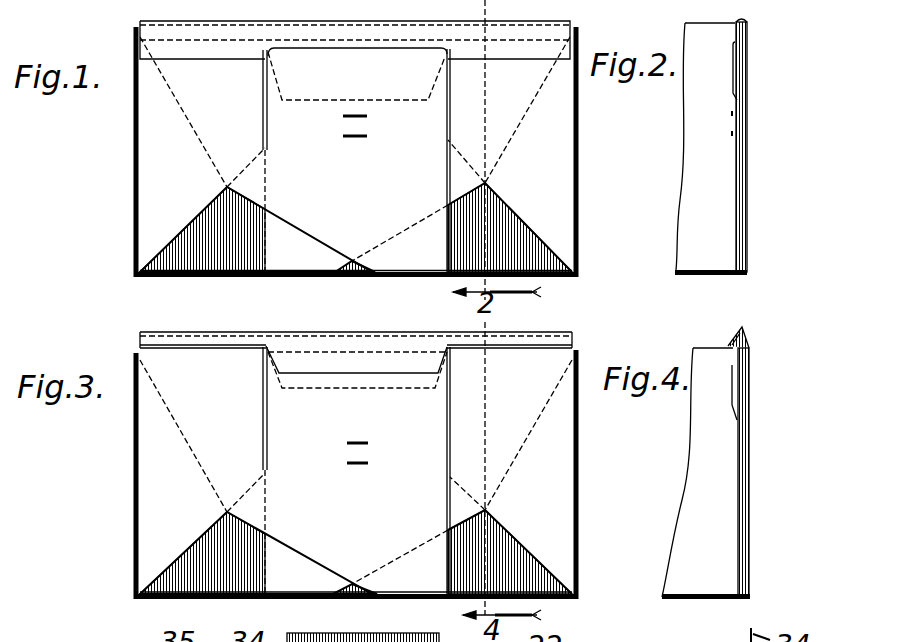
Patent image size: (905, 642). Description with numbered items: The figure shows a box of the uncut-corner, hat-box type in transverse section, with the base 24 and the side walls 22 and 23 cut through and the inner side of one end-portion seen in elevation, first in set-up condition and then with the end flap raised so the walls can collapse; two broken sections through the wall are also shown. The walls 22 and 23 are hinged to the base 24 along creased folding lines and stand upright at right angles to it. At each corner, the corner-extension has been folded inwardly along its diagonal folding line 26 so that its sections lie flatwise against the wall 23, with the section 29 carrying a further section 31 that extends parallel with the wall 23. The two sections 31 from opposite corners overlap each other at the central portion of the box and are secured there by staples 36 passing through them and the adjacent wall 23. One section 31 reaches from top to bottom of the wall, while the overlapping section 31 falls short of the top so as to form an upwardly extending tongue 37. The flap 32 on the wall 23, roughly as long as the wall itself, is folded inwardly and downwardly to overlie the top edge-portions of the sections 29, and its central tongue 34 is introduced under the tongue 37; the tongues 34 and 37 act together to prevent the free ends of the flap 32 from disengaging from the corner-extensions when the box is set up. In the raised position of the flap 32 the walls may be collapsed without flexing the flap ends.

In FIG. 1, the box side 22 is at (134, 145).
In FIG. 2, the box side 22 is at (702, 218).
In FIG. 3, the box side 22 is at (133, 518).
In FIG. 4, the box side 22 is at (708, 353).
In FIG. 2, the box side 23 is at (750, 245).
In FIG. 4, the box side 23 is at (750, 493).
In FIG. 1, the base 24 is at (367, 276).
In FIG. 2, the base 24 is at (703, 275).
In FIG. 3, the base 24 is at (367, 598).
In FIG. 4, the base 24 is at (688, 596).
In FIG. 1, the diagonal folding line 26 is at (227, 187).
In FIG. 3, the diagonal folding line 26 is at (227, 512).
In FIG. 1, the section 29 is at (165, 190).
In FIG. 3, the section 29 is at (356, 532).
In FIG. 1, the section 31 is at (356, 250).
In FIG. 2, the section 31 is at (737, 68).
In FIG. 3, the section 31 is at (356, 544).
In FIG. 4, the section 31 is at (737, 480).
In FIG. 1, the flap 32 is at (223, 50).
In FIG. 2, the flap 32 is at (742, 18).
In FIG. 3, the flap 32 is at (220, 333).
In FIG. 4, the flap 32 is at (740, 327).
In FIG. 1, the tongue 34 is at (312, 98).
In FIG. 3, the tongue 34 is at (383, 368).
In FIG. 1, the staple 36 is at (367, 137).
In FIG. 2, the staple 36 is at (750, 128).
In FIG. 3, the staple 36 is at (347, 463).
In FIG. 4, the staple 36 is at (750, 457).
In FIG. 1, the tongue 37 is at (357, 74).
In FIG. 2, the tongue 37 is at (737, 65).
In FIG. 3, the tongue 37 is at (356, 390).
In FIG. 4, the tongue 37 is at (730, 400).